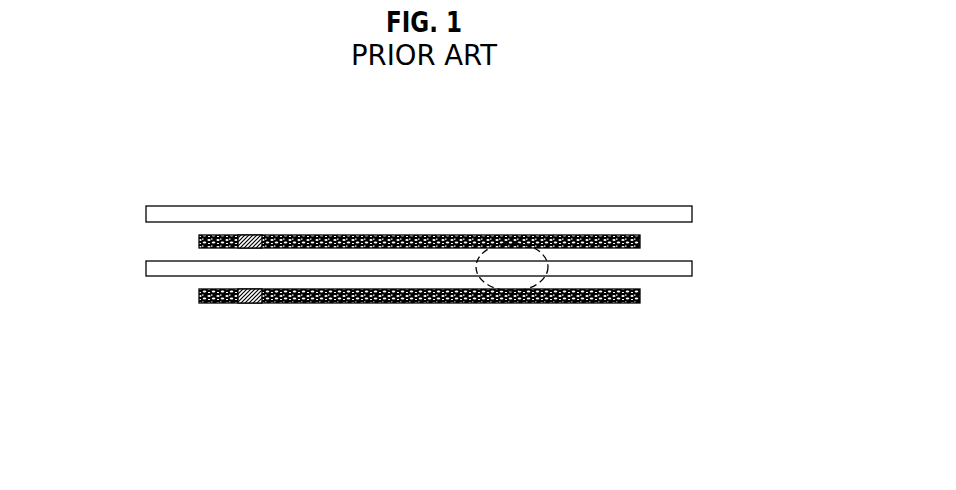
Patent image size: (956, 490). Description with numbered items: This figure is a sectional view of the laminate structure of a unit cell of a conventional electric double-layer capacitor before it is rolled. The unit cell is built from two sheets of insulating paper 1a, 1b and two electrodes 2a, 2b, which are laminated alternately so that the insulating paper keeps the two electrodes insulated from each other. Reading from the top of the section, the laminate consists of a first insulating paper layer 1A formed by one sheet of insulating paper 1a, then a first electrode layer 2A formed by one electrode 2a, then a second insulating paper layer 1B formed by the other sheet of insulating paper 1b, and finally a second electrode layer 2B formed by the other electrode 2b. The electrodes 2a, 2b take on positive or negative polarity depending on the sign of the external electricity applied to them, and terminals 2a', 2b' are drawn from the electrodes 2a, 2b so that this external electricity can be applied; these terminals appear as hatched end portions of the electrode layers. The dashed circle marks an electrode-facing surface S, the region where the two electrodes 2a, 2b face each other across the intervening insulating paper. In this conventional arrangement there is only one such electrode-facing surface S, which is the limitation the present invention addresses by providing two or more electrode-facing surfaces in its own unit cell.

The first insulating paper layer 1A is at (372, 182).
The sheet of insulating paper 1a is at (187, 212).
The first electrode layer 2A is at (346, 204).
The electrode 2a is at (419, 200).
The terminal 2a' is at (272, 200).
The second insulating paper layer 1B is at (372, 307).
The sheet of insulating paper 1b is at (352, 267).
The second electrode layer 2B is at (346, 329).
The electrode 2b is at (419, 331).
The terminal 2b' is at (267, 332).
The electrode-facing surface S is at (543, 283).